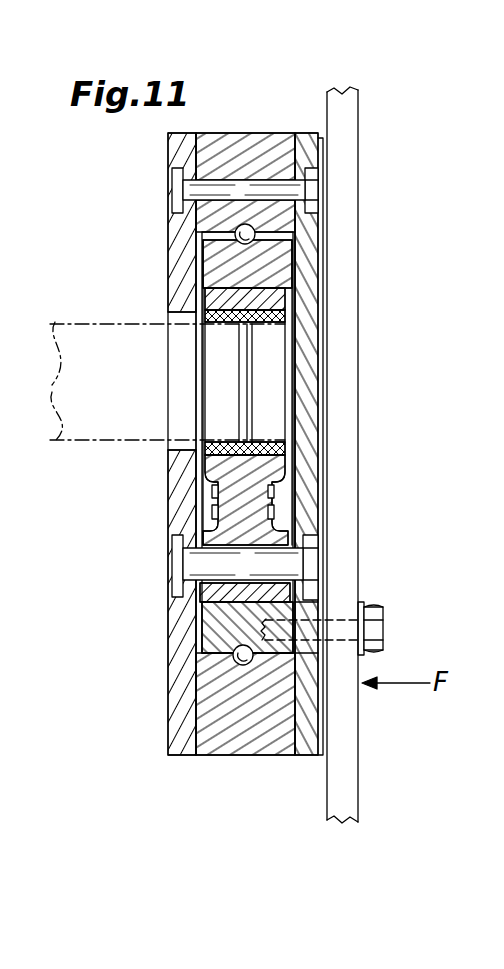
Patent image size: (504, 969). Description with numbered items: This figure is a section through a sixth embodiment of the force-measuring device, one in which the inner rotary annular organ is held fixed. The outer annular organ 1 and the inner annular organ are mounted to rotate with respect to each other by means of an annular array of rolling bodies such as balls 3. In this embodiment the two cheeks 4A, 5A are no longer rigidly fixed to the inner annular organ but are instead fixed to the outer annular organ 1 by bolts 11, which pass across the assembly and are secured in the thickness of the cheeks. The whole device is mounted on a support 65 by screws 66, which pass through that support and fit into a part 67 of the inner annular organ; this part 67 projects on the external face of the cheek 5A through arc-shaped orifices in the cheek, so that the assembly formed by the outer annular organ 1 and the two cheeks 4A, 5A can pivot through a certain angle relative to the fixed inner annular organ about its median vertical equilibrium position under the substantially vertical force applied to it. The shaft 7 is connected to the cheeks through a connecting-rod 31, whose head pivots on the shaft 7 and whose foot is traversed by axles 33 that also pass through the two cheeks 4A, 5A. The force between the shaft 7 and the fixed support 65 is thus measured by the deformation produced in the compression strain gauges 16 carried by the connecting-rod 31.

The outer annular organ 1 is at (232, 740).
The balls 3 is at (232, 661).
The cheek 4A is at (177, 735).
The cheek 5A is at (309, 742).
The shaft 7 is at (105, 336).
The bolts 11 is at (313, 188).
The compression strain gauges 16 is at (213, 513).
The connecting-rod 31 is at (246, 483).
The axles 33 is at (193, 560).
The support 65 is at (347, 753).
The screws 66 is at (378, 613).
The part of the inner annular organ 67 is at (223, 621).